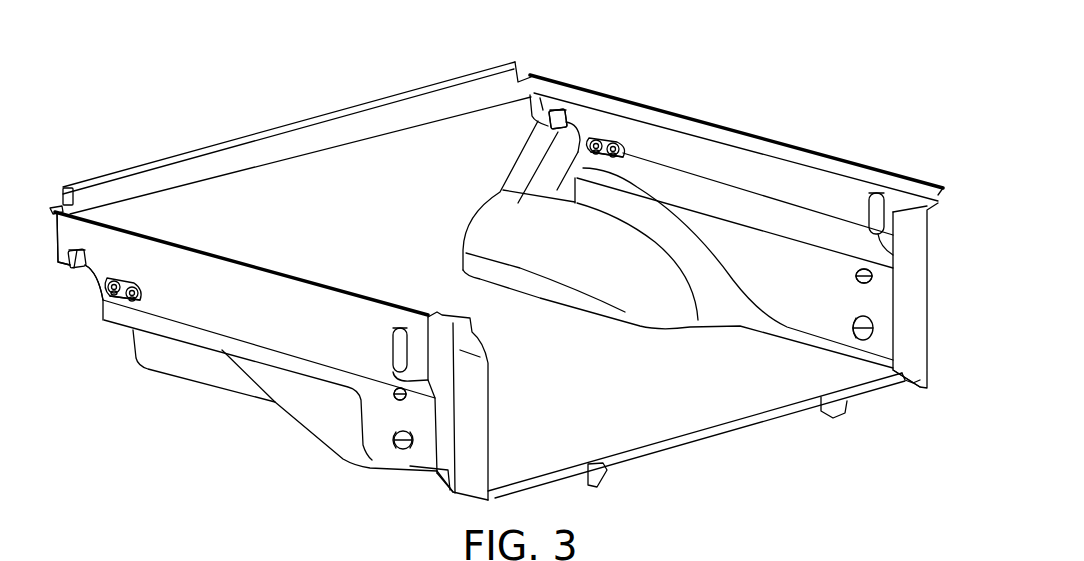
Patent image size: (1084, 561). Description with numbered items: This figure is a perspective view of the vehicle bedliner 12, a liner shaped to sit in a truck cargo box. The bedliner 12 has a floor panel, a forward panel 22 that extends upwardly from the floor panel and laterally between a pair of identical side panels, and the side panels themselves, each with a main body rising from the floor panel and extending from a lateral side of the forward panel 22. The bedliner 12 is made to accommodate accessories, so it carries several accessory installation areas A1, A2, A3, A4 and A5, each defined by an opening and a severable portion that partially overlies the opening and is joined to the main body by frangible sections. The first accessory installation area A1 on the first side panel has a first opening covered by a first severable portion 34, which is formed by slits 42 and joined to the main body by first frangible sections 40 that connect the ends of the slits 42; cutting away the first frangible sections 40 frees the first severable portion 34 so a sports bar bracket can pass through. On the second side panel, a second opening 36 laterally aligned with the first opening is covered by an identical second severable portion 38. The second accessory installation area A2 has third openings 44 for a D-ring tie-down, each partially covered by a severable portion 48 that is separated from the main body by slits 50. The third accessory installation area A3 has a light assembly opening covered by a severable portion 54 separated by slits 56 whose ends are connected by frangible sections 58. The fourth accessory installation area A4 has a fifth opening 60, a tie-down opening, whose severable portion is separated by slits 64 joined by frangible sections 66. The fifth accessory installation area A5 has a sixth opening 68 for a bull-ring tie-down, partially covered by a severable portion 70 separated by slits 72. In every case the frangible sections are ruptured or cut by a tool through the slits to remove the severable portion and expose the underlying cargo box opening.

The vehicle bedliner 12 is at (718, 42).
The forward panel 22 is at (300, 200).
The first severable portion 34 is at (549, 128).
The second opening 36 is at (68, 236).
The second severable portion 38 is at (72, 268).
The first frangible section 40 is at (553, 110).
The slit 42 is at (543, 110).
The third opening 44 is at (140, 297).
The severable portion 48 is at (594, 146).
The slit 50 is at (594, 140).
The severable portion 54 is at (440, 330).
The slit 56 is at (390, 333).
The frangible section 58 is at (402, 328).
The fifth opening 60 is at (845, 267).
The slit 64 is at (393, 394).
The frangible section 66 is at (400, 388).
The sixth opening 68 is at (420, 448).
The severable portion 70 is at (412, 436).
The slit 72 is at (398, 442).
The first accessory installation area A1 is at (528, 116).
The second accessory installation area A2 is at (616, 126).
The third accessory installation area A3 is at (392, 322).
The fourth accessory installation area A4 is at (391, 408).
The fifth accessory installation area A5 is at (382, 440).